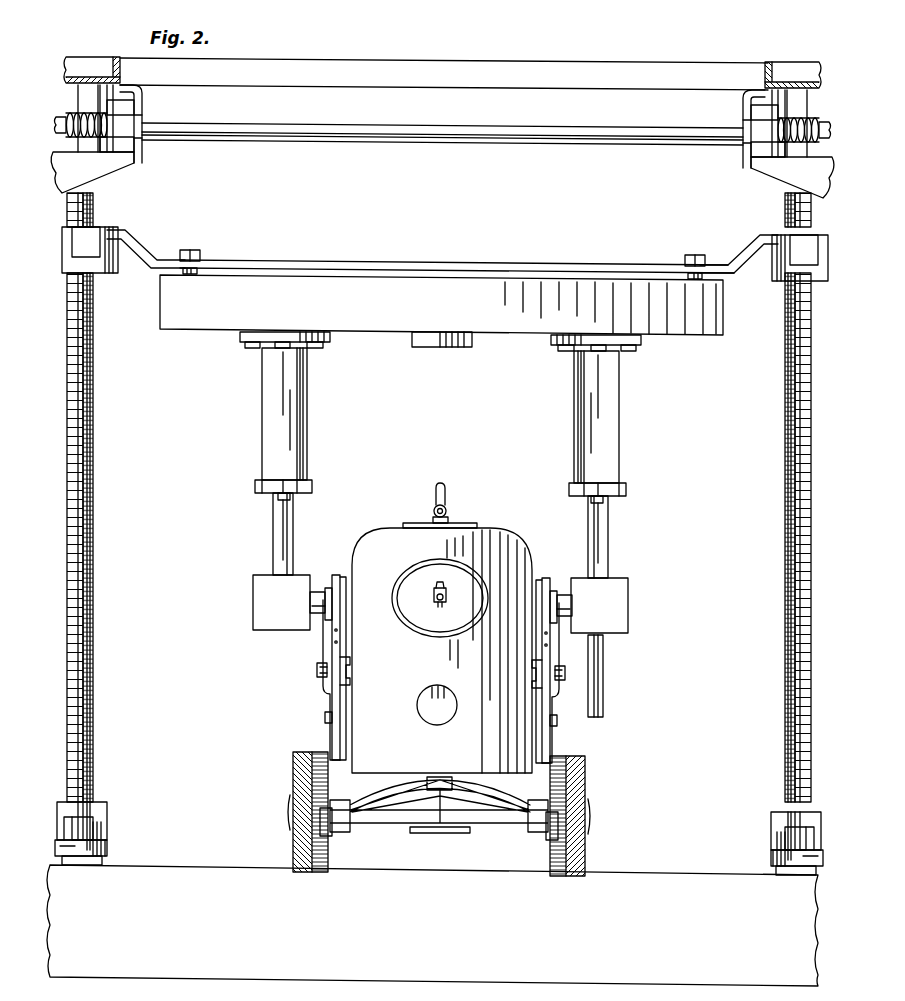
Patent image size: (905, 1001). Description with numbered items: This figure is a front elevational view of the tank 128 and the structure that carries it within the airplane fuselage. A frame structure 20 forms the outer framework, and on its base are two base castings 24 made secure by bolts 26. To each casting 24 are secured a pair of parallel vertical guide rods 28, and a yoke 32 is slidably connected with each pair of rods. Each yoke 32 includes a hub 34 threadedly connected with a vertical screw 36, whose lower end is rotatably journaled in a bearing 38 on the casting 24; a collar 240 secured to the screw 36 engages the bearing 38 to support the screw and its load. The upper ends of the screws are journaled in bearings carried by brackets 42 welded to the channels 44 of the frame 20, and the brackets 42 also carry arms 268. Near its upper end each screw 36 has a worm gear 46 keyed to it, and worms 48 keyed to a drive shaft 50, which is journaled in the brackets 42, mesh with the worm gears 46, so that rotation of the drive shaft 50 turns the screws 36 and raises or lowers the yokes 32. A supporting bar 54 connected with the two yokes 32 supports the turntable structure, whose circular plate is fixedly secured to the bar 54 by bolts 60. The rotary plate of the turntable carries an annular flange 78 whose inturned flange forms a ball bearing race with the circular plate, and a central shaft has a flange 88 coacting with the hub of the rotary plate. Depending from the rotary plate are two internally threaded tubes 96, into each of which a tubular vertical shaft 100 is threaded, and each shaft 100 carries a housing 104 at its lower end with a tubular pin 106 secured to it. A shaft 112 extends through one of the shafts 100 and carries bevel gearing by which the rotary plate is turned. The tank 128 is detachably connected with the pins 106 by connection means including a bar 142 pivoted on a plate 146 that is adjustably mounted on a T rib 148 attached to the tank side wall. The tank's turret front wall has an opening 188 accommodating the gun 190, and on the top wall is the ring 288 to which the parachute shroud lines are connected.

The frame structure 20 is at (384, 59).
The base casting 24 is at (100, 861).
The bolt 26 is at (108, 850).
The vertical guide rod 28 is at (98, 833).
The yoke 32 is at (129, 232).
The hub 34 is at (112, 272).
The vertical screw 36 is at (96, 558).
The bearing 38 is at (100, 820).
The bracket 42 is at (143, 108).
The channel 44 is at (116, 58).
The worm gear 46 is at (56, 120).
The worm 48 is at (103, 125).
The drive shaft 50 is at (497, 130).
The supporting bar 54 is at (584, 258).
The bolt 60 is at (190, 250).
The annular flange 78 is at (158, 326).
The flange 88 is at (432, 346).
The internally threaded tube 96 is at (305, 410).
The vertical shaft 100 is at (273, 548).
The housing 104 is at (258, 606).
The tubular pin 106 is at (321, 591).
The shaft 112 is at (603, 690).
The tank 128 is at (514, 537).
The bar 142 is at (330, 645).
The plate 146 is at (322, 668).
The T rib 148 is at (340, 672).
The opening 188 is at (416, 570).
The gun 190 is at (433, 600).
The collar 240 is at (108, 805).
The arm 268 is at (121, 164).
The ring 288 is at (440, 483).